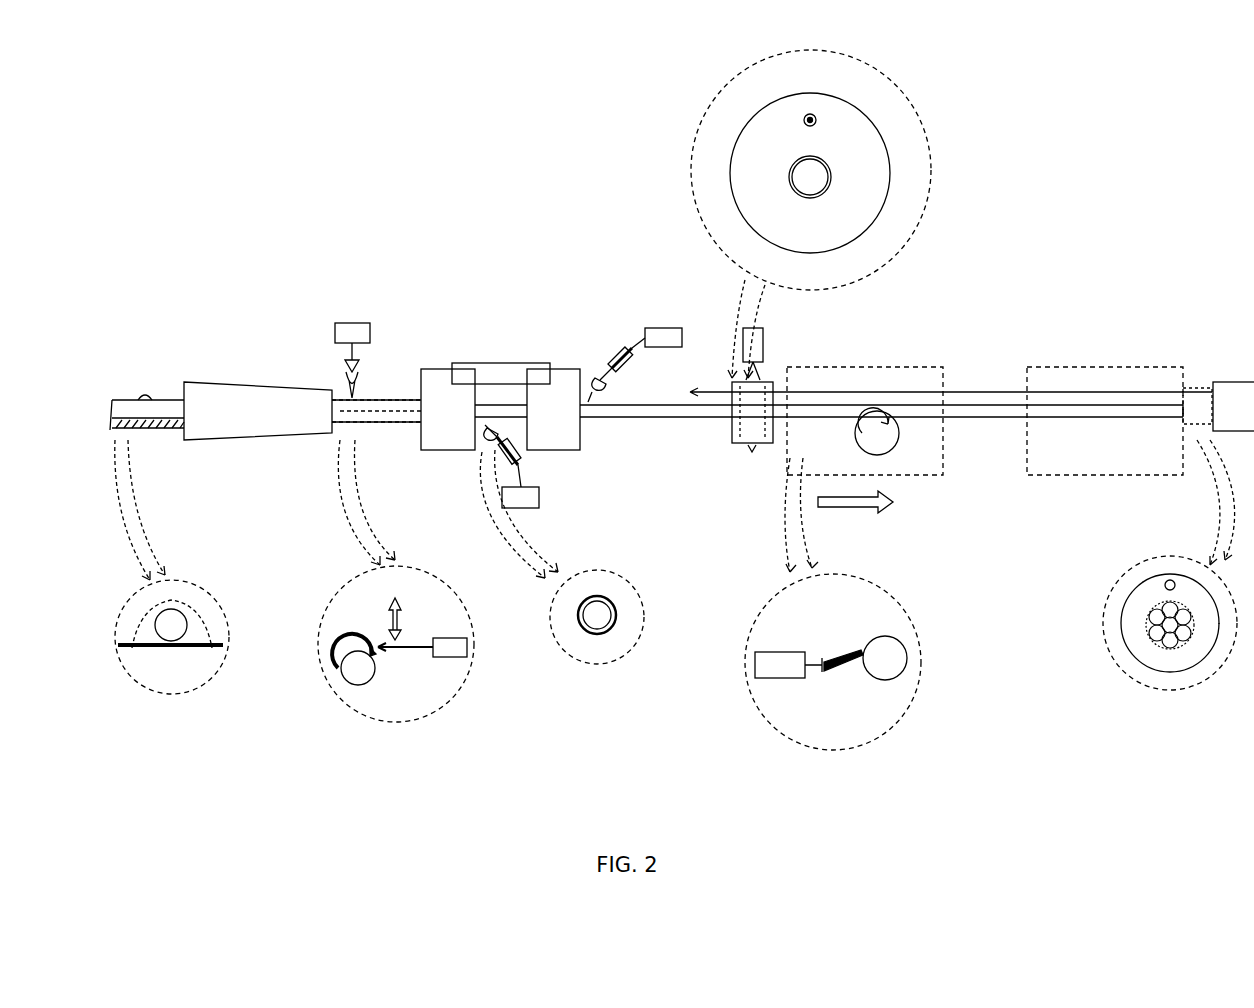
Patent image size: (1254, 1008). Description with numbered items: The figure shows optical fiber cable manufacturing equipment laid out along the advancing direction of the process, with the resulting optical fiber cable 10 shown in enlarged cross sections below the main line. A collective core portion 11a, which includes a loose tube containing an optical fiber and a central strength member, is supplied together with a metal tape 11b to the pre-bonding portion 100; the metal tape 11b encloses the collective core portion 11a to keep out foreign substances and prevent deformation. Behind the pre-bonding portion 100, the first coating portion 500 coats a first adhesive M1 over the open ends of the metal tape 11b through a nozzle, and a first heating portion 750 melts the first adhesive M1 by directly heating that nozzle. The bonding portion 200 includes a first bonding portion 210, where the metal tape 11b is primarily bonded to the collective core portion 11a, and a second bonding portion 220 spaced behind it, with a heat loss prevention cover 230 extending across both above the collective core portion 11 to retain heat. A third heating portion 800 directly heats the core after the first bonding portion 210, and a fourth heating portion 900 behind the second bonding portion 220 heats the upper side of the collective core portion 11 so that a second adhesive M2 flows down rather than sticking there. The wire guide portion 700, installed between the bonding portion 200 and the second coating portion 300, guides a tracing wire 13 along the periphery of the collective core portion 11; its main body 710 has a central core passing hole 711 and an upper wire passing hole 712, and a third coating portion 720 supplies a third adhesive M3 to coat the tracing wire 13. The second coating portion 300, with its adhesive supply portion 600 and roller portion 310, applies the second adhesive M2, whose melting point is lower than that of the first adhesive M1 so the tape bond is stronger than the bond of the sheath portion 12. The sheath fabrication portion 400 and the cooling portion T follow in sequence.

The cable 10 is at (1125, 585).
The collective core portion 11 is at (808, 178).
The collective core portion 11a is at (130, 400).
The metal tape 11b is at (118, 432).
The sheath portion 12 is at (1135, 643).
The tracing wire 13 is at (803, 117).
The pre-bonding portion 100 is at (242, 378).
The bonding portion 200 is at (412, 275).
The first bonding portion 210 is at (437, 368).
The second bonding portion 220 is at (562, 368).
The heat loss prevention cover 230 is at (500, 362).
The second coating portion 300 is at (960, 370).
The roller portion 310 is at (900, 434).
The sheath fabrication portion 400 is at (1100, 365).
The first coating portion 500 is at (455, 660).
The adhesive supply portion 600 is at (838, 670).
The wire guide portion 700 is at (893, 300).
The main body 710 is at (775, 383).
The core passing hole 711 is at (790, 158).
The wire passing hole 712 is at (820, 118).
The third coating portion 720 is at (768, 330).
The first heating portion 750 is at (350, 320).
The third heating portion 800 is at (545, 493).
The fourth heating portion 900 is at (636, 326).
The first adhesive M1 is at (372, 635).
The second adhesive M2 is at (860, 650).
The third adhesive M3 is at (810, 112).
The cooling portion T is at (1240, 395).